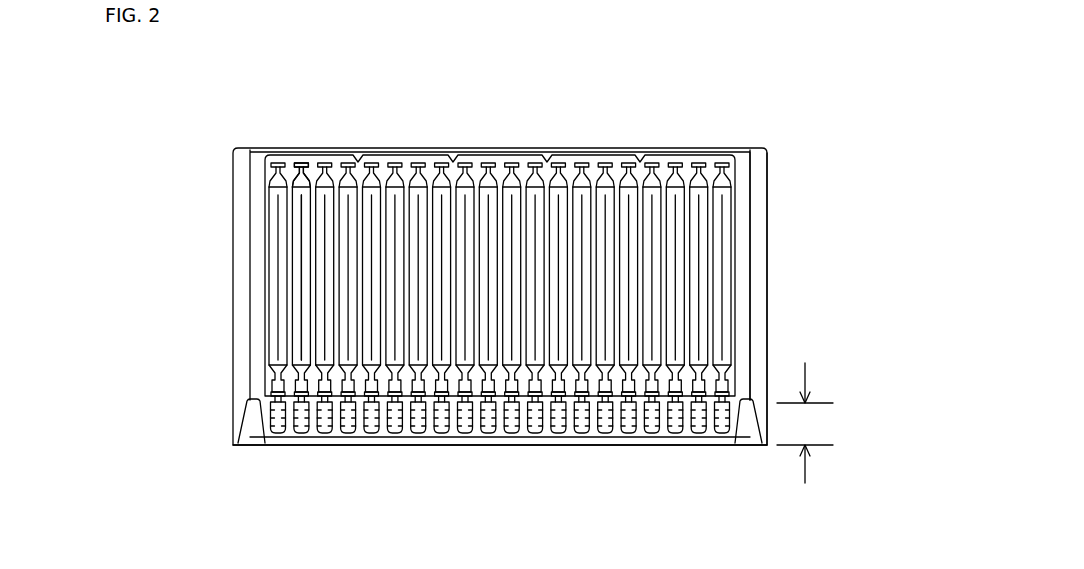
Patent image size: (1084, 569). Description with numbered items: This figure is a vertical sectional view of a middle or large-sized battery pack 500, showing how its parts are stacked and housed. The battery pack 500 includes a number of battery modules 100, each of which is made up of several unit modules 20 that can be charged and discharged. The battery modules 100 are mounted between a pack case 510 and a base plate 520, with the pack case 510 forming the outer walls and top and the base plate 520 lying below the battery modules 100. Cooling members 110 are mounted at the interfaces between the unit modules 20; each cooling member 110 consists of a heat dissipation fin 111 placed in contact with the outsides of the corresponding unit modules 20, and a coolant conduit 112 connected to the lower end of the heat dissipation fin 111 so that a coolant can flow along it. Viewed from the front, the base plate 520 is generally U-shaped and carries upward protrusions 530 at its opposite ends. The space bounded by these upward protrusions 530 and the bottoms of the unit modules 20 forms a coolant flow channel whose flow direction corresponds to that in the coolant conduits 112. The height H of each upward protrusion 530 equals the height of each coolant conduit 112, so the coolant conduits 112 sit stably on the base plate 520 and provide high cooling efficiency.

The middle or large-sized battery pack 500 is at (133, 88).
The battery module 100 is at (683, 142).
The unit module 20 is at (703, 273).
The cooling member 110 is at (303, 273).
The heat dissipation fin 111 is at (303, 328).
The coolant conduit 112 is at (350, 428).
The pack case 510 is at (763, 312).
The base plate 520 is at (524, 446).
The upward protrusion 530 is at (256, 424).
The height H is at (805, 423).